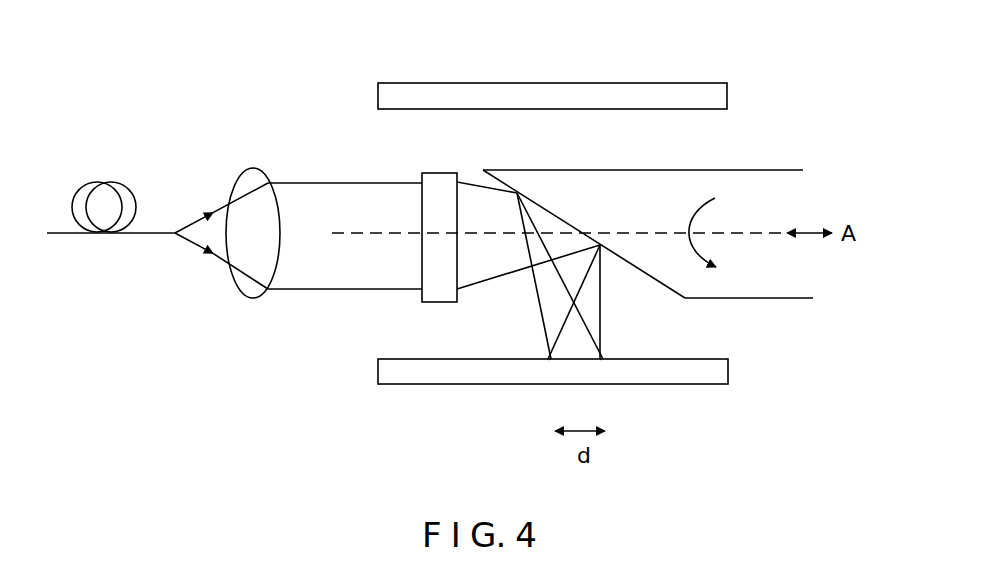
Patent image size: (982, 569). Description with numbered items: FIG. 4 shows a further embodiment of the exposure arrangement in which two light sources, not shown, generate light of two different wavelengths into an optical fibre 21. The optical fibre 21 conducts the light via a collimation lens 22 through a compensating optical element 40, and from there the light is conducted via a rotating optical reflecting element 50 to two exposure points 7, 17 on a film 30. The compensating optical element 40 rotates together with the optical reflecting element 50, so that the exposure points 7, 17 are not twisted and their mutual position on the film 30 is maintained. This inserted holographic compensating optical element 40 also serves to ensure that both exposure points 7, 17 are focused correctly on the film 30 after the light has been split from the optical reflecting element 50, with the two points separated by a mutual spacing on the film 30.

The optical fibre 21 is at (77, 187).
The collimation lens 22 is at (237, 180).
The compensating optical element 40 is at (420, 173).
The rotating optical reflecting element 50 is at (755, 169).
The film 30 is at (393, 82).
The exposure point 7 is at (548, 359).
The exposure point 17 is at (603, 358).